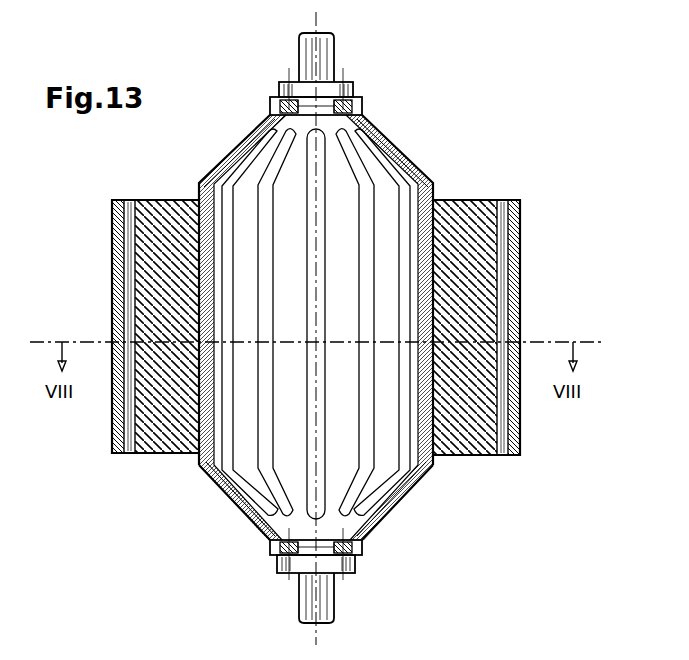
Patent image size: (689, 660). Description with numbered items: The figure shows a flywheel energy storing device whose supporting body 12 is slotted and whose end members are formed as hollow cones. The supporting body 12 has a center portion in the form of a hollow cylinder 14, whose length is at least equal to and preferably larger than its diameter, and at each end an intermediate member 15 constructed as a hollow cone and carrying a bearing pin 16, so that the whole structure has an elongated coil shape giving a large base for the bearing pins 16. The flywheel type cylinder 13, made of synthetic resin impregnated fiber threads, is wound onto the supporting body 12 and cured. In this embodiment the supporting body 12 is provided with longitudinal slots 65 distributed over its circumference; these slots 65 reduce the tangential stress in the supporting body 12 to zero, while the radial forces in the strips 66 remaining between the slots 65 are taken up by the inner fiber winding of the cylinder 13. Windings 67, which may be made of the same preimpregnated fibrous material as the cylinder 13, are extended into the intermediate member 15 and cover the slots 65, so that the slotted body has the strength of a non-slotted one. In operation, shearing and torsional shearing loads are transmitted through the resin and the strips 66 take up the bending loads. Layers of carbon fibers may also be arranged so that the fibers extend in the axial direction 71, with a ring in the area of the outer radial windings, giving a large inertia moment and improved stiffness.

The supporting body 12 is at (522, 225).
The flywheel type cylinder 13 is at (478, 196).
The hollow cylinder 14 is at (520, 275).
The intermediate member 15 is at (228, 150).
The bearing pin 16 is at (324, 52).
The longitudinal slots 65 is at (353, 168).
The strips 66 is at (412, 222).
The windings 67 is at (405, 152).
The axial direction 71 is at (507, 457).